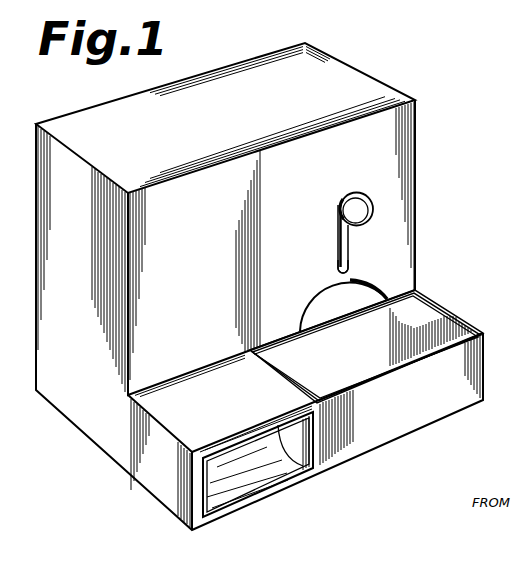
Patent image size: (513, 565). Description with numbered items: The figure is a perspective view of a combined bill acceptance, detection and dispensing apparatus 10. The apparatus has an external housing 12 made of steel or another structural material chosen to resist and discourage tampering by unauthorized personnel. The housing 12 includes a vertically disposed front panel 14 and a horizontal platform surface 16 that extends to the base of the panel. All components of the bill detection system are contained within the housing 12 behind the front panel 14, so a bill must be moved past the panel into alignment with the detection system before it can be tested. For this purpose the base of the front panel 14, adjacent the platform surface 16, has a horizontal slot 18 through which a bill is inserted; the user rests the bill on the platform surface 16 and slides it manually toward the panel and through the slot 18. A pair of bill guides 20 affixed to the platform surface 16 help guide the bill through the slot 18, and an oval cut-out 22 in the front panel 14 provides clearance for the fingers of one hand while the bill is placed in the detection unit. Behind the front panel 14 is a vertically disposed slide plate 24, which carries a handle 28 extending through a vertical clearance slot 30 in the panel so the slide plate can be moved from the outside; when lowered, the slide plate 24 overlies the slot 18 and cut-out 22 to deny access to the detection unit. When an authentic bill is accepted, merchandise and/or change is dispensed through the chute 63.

The combined bill acceptance, detection and dispensing apparatus 10 is at (368, 72).
The external housing 12 is at (417, 206).
The front panel 14 is at (416, 152).
The platform surface 16 is at (402, 368).
The horizontal slot 18 is at (394, 304).
The bill guides 20 is at (460, 317).
The oval cut-out 22 is at (368, 288).
The slide plate 24 is at (348, 243).
The handle 28 is at (371, 213).
The vertical clearance slot 30 is at (337, 268).
The chute 63 is at (276, 474).